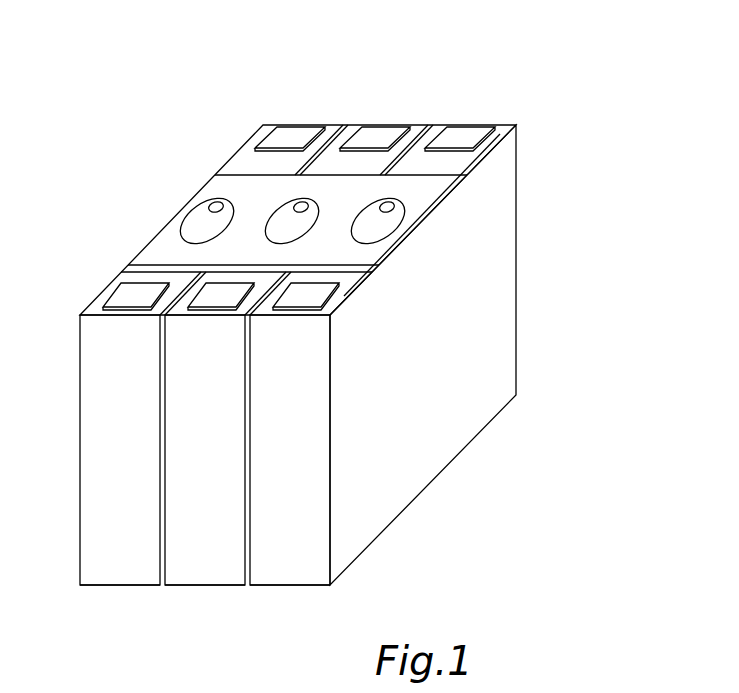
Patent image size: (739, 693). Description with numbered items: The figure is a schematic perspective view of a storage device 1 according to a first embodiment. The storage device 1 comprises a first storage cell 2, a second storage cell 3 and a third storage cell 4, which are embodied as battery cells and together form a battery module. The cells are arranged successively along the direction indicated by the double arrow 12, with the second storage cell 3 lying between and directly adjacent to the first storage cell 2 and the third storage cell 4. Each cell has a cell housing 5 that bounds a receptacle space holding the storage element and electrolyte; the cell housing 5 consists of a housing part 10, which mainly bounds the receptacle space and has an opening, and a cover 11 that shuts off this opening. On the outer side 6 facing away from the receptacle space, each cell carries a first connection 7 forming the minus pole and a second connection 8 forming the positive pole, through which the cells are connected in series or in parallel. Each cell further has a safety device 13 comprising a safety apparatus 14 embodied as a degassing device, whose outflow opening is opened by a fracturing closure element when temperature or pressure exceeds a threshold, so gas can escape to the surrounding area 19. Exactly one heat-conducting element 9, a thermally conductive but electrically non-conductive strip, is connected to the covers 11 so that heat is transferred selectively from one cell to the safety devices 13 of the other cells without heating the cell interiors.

The storage device 1 is at (510, 123).
The first storage cell 2 is at (101, 450).
The second storage cell 3 is at (233, 589).
The third storage cell 4 is at (304, 589).
The cell housing 5 is at (92, 575).
The outer side 6 is at (99, 297).
The first connection 7 is at (130, 298).
The second connection 8 is at (292, 133).
The heat-conducting element 9 is at (217, 192).
The housing part 10 is at (520, 324).
The cover 11 is at (245, 165).
The double arrow 12 is at (482, 513).
The safety device 13 is at (178, 212).
The safety apparatus 14 is at (188, 232).
The surrounding area 19 is at (88, 126).